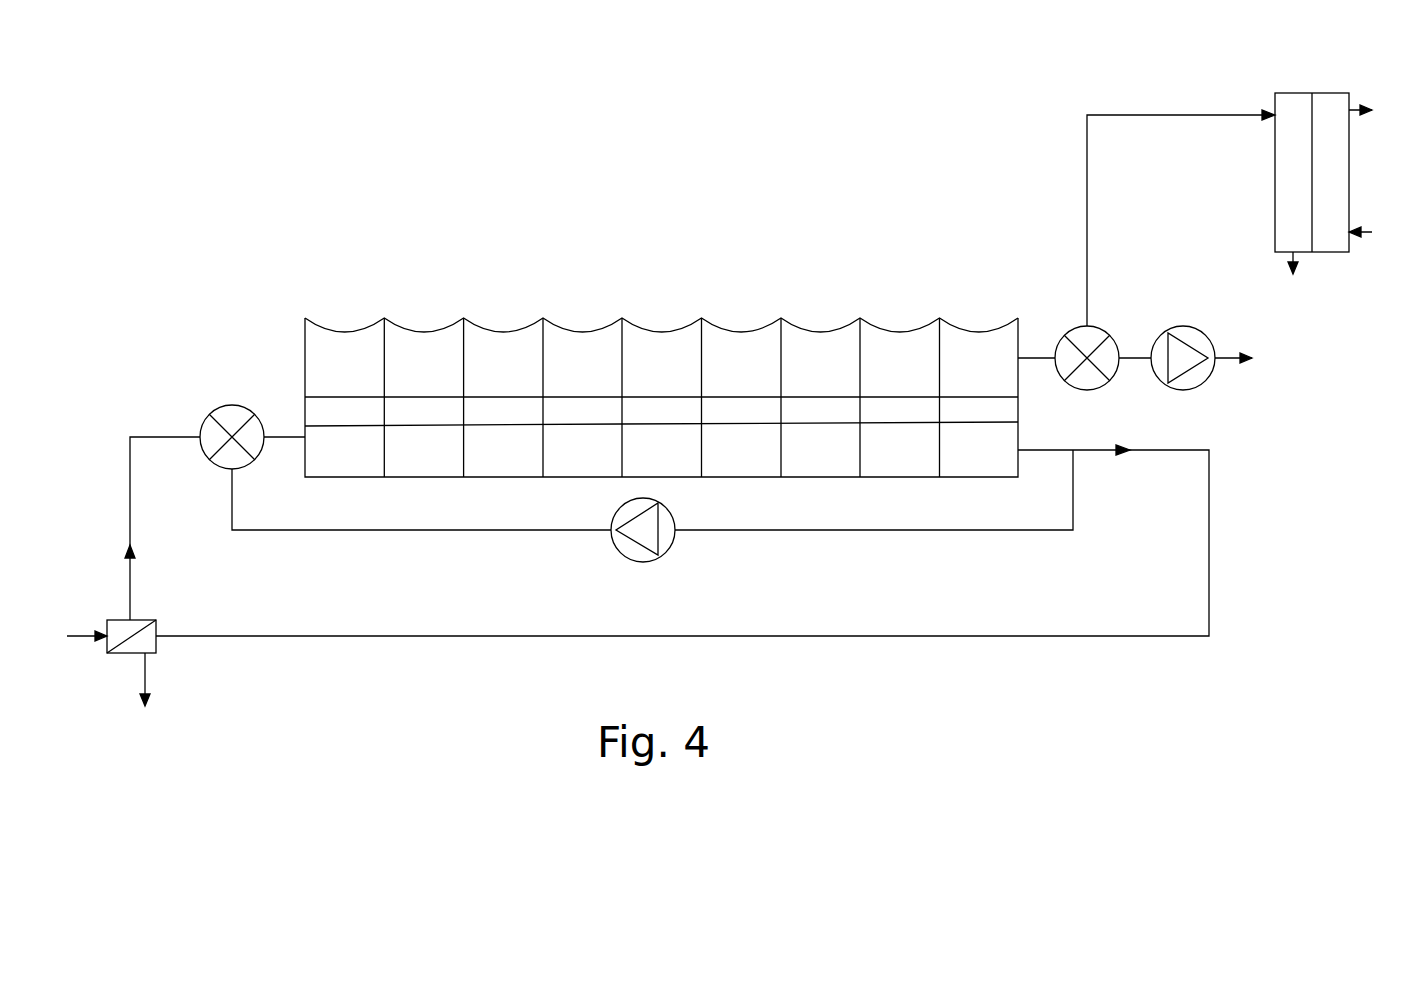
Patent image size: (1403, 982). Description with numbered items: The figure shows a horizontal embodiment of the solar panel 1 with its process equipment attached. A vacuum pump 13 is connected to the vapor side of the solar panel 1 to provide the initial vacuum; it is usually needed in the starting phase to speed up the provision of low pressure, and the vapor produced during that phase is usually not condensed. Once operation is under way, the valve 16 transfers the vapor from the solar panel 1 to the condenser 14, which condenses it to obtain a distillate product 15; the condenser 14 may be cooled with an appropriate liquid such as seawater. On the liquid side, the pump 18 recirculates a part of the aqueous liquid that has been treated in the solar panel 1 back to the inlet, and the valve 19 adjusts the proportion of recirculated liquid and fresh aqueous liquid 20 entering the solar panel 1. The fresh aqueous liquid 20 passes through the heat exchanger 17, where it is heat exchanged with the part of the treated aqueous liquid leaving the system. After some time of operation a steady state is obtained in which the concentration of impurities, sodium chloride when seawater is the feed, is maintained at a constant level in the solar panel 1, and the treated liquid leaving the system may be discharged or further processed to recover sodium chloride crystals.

The solar panel 1 is at (692, 282).
The vacuum pump 13 is at (1190, 373).
The condenser 14 is at (1288, 93).
The distillate product 15 is at (1299, 278).
The valve 16 is at (1085, 338).
The heat exchanger 17 is at (145, 637).
The pump 18 is at (665, 516).
The valve 19 is at (232, 414).
The fresh aqueous liquid 20 is at (86, 637).